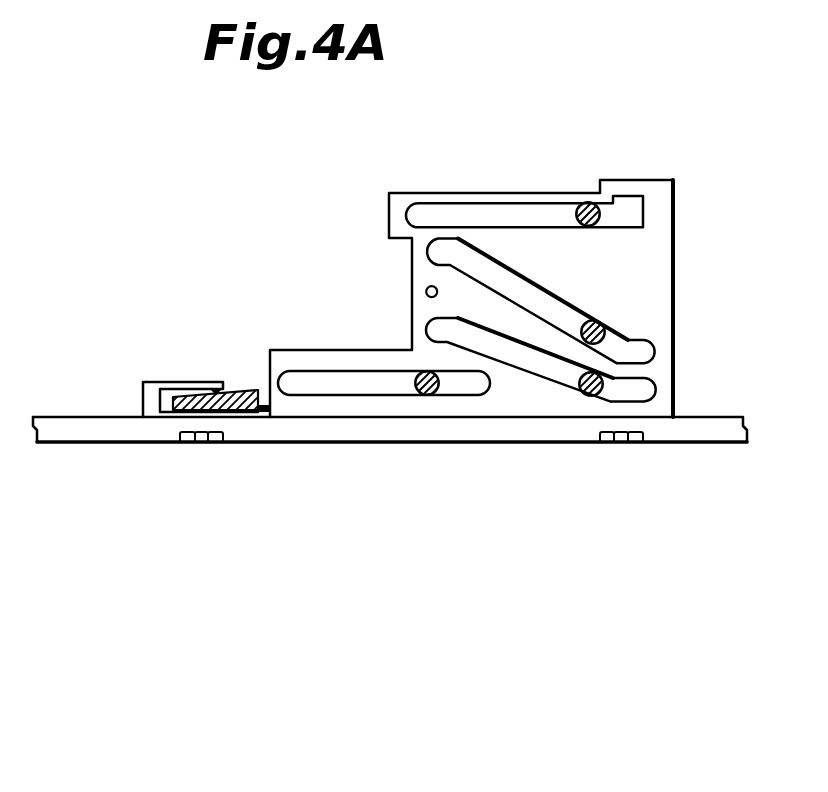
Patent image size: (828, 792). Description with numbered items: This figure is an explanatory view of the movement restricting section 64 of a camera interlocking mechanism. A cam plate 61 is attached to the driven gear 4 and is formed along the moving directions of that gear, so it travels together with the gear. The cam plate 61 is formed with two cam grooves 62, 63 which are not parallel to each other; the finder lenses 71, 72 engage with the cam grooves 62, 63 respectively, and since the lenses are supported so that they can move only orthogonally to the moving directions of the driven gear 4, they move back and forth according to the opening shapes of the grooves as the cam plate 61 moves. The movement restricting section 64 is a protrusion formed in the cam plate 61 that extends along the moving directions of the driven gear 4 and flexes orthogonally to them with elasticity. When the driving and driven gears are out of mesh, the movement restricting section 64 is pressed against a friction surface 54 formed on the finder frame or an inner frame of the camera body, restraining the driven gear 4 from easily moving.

The driven gear 4 is at (527, 433).
The friction surface 54 is at (250, 390).
The cam plate 61 is at (662, 187).
The cam groove 62 is at (452, 322).
The cam groove 63 is at (483, 258).
The movement restricting section 64 is at (177, 380).
The lens 71 is at (600, 390).
The lens 72 is at (600, 330).